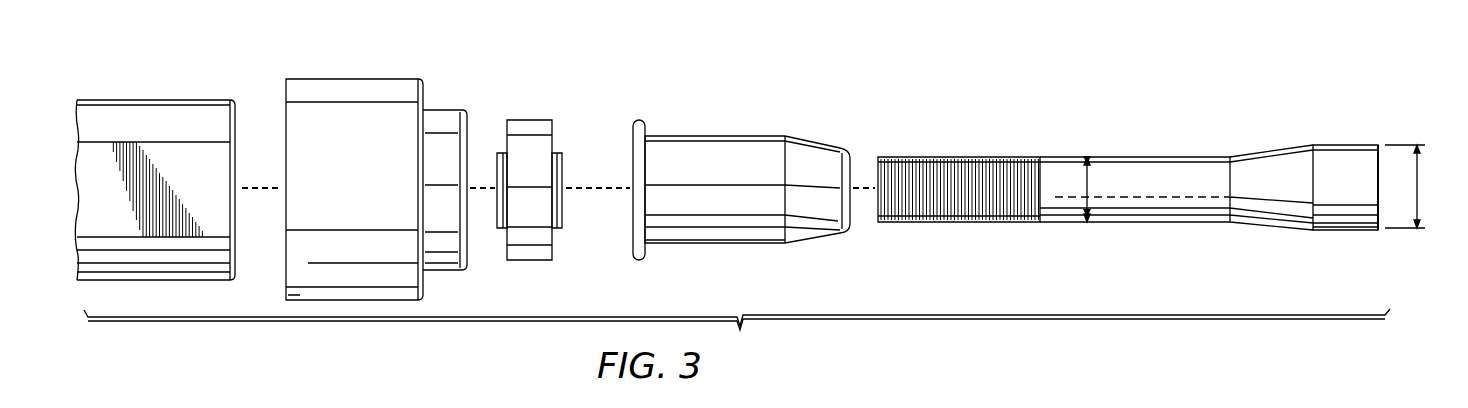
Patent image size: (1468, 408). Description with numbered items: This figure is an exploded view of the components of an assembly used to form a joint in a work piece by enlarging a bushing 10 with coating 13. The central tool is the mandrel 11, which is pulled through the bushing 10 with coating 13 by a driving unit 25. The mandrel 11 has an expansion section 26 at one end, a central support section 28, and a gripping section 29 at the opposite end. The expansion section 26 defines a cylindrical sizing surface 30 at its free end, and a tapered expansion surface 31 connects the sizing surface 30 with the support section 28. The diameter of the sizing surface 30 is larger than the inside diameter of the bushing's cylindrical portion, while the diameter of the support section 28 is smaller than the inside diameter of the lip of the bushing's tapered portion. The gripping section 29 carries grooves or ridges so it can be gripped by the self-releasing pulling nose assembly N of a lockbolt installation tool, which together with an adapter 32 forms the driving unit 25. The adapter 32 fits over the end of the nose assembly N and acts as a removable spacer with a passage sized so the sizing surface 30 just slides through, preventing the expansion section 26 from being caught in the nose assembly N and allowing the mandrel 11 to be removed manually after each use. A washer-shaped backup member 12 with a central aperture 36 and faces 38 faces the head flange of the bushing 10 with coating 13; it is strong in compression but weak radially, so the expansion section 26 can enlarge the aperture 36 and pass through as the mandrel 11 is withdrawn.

The self-releasing pulling nose assembly N is at (160, 100).
The driving unit 25 is at (267, 86).
The adapter 32 is at (385, 79).
The backup member 12 is at (561, 168).
The faces 38 is at (552, 138).
The central aperture 36 is at (570, 212).
The coating 13 is at (647, 130).
The bushing 10 is at (744, 130).
The mandrel 11 is at (1153, 151).
The gripping section 29 is at (960, 157).
The central support section 28 is at (1147, 158).
The tapered expansion surface 31 is at (1272, 150).
The expansion section 26 is at (1313, 147).
The cylindrical sizing surface 30 is at (1360, 145).